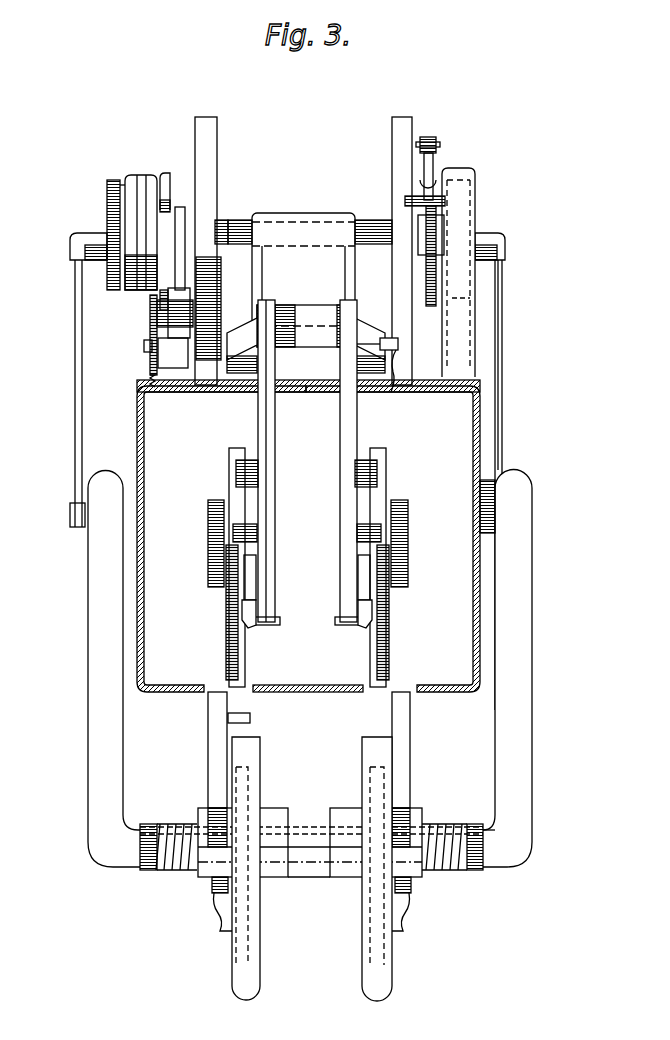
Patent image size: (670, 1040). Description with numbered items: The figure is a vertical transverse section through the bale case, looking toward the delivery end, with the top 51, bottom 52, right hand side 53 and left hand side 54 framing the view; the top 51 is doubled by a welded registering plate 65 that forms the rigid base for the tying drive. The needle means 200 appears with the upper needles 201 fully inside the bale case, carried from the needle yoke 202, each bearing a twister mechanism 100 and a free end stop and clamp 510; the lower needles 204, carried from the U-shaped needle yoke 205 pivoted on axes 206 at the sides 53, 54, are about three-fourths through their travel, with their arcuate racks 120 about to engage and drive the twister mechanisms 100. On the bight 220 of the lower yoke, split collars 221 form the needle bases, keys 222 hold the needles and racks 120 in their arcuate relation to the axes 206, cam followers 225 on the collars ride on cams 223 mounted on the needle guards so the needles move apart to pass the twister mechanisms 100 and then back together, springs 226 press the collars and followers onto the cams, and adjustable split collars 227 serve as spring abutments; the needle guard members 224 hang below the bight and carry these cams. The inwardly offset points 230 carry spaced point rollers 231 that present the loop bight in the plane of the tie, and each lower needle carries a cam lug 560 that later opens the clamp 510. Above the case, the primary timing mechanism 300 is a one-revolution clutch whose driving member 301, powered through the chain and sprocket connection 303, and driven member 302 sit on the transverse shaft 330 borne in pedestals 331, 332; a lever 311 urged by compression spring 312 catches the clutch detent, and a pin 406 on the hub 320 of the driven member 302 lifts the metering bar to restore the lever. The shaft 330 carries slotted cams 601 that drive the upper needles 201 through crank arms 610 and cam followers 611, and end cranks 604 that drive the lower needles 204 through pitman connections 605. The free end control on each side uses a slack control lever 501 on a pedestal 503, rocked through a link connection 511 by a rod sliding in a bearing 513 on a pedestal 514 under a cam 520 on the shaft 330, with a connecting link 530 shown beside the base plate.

The top of the bale case 51 is at (172, 388).
The bottom of the bale case 52 is at (186, 694).
The right hand side of the bale case 53 is at (478, 621).
The left hand side of the bale case 54 is at (137, 606).
The registering plate 65 is at (417, 383).
The twister mechanism 100 is at (357, 532).
The arcuate rack 120 is at (225, 606).
The needle means 200 is at (307, 524).
The upper needles 201 is at (277, 437).
The needle yoke 202 is at (301, 312).
The lower needles 204 is at (208, 755).
The U-shaped needle yoke 205 is at (525, 687).
The axes 206 is at (497, 507).
The bight of the yoke 220 is at (313, 877).
The split collars 221 is at (285, 808).
The keys 222 is at (295, 828).
The cams 223 is at (220, 912).
The hanging bar 224 is at (393, 982).
The cam followers 225 is at (212, 886).
The springs 226 is at (172, 824).
The split collars 227 is at (480, 846).
The points of the lower needles 230 is at (386, 479).
The point rollers 231 is at (240, 447).
The primary timing mechanism 300 is at (132, 176).
The driving member 301 is at (128, 177).
The driven member 302 is at (150, 173).
The chain and sprocket connection 303 is at (107, 185).
The lever 311 is at (150, 321).
The compression spring 312 is at (148, 368).
The hub or sleeve 320 is at (173, 197).
The shaft 330 is at (314, 221).
The pedestal 331 is at (471, 298).
The pedestal 332 is at (280, 217).
The axially projecting pin 406 is at (158, 304).
The slack control lever 501 is at (432, 170).
The pedestal 503 is at (466, 193).
The free end stop and clamp 510 is at (250, 626).
The link connection 511 is at (437, 141).
The bearing 513 is at (462, 178).
The pedestal 514 is at (450, 271).
The cam 520 is at (432, 312).
The link 530 is at (392, 372).
The cam lug 560 is at (250, 716).
The slotted cams 601 is at (392, 128).
The cranks 604 is at (92, 228).
The pitman connections 605 is at (504, 410).
The crank arms 610 is at (368, 280).
The cam followers 611 is at (219, 218).